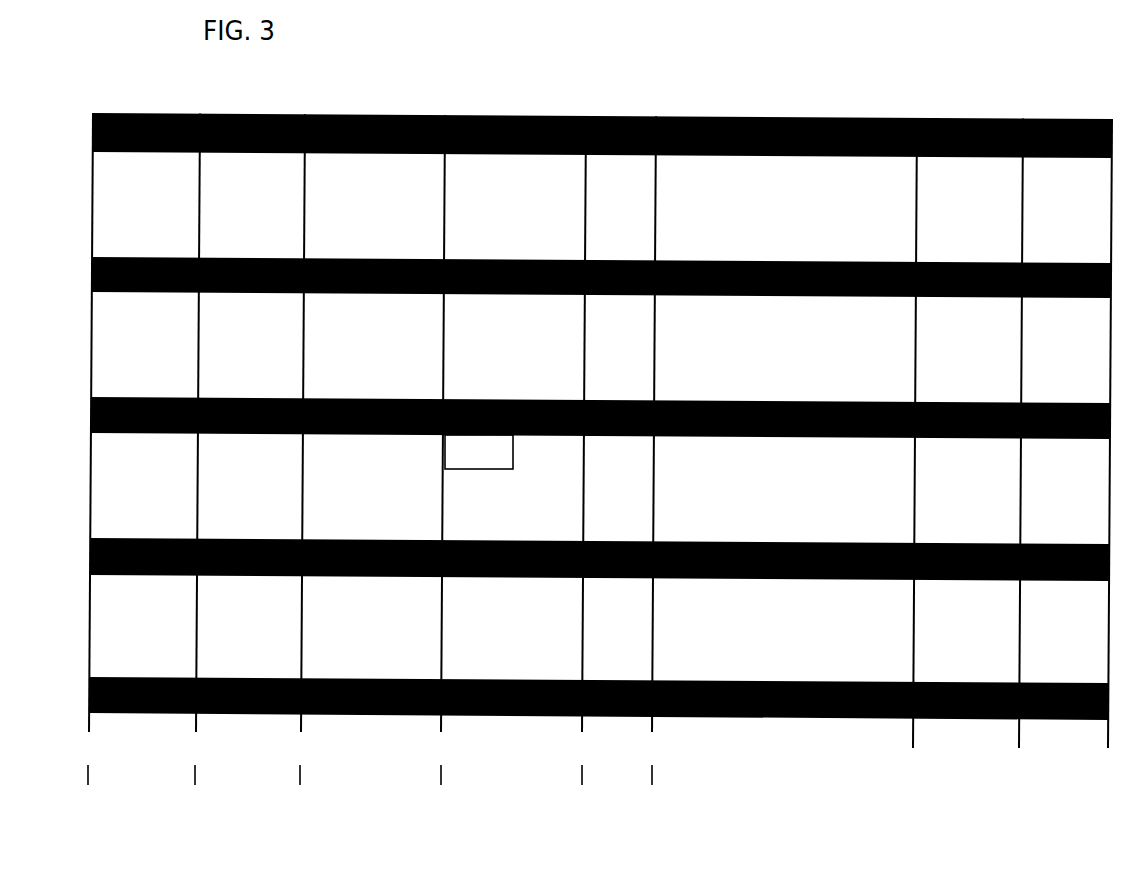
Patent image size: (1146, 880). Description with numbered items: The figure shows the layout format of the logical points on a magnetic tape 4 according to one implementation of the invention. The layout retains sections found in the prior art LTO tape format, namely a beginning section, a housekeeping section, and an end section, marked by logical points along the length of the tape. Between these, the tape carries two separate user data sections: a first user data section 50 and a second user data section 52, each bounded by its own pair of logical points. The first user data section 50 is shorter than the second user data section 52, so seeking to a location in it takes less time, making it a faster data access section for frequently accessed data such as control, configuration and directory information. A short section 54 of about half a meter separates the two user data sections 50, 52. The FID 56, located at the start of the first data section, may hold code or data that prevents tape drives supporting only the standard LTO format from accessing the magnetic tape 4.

The magnetic tape 4 is at (435, 116).
The first user data section 50 is at (537, 731).
The second user data section 52 is at (821, 756).
The separating section 54 is at (627, 758).
The FID 56 is at (513, 463).